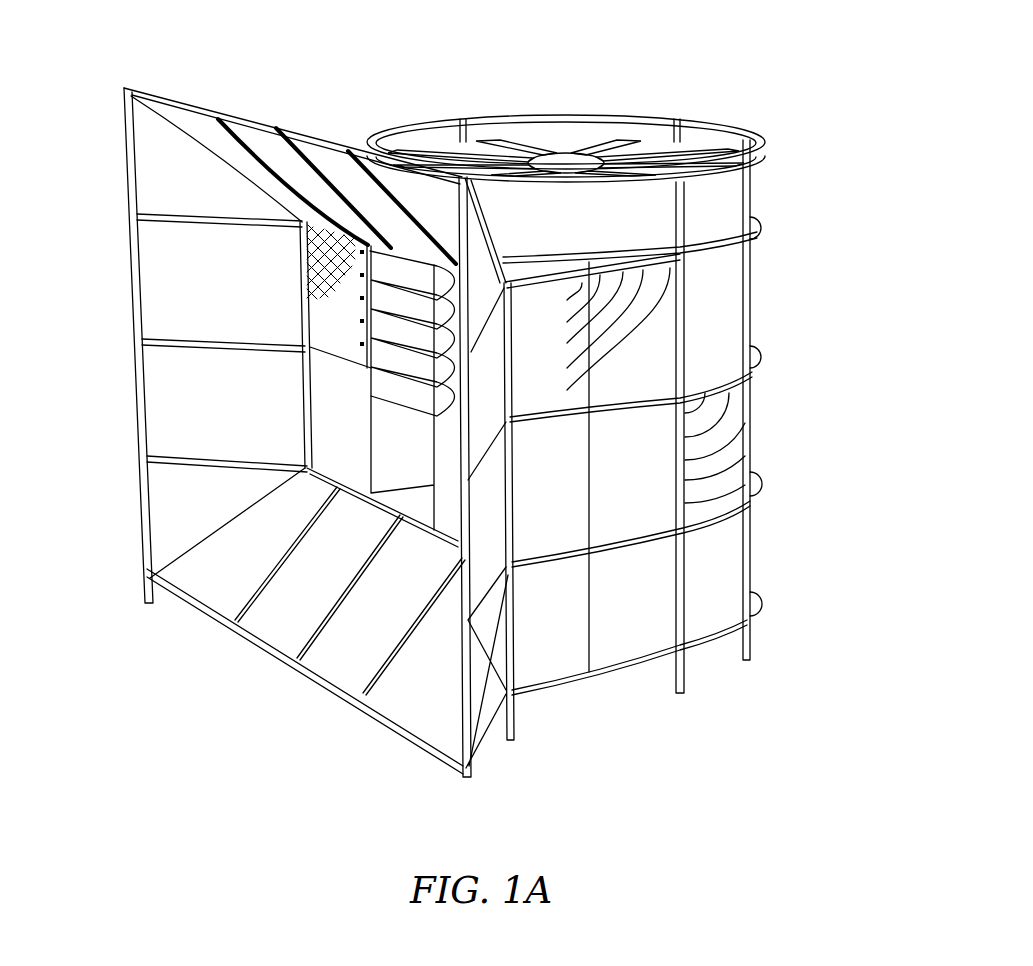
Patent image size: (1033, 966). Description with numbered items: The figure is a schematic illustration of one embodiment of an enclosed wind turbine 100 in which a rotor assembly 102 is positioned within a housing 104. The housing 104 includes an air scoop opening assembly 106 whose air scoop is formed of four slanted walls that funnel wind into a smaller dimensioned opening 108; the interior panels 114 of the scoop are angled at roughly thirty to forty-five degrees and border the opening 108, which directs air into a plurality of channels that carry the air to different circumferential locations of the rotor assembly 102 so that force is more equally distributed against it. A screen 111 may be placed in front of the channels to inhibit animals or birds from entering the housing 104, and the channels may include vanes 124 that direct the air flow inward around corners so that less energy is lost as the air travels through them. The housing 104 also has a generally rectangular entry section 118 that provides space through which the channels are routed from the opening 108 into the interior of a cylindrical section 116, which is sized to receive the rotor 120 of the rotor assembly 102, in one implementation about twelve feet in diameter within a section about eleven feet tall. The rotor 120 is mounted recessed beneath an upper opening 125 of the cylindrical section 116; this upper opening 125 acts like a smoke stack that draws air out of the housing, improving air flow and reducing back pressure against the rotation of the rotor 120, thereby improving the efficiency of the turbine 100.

The wind turbine 100 is at (528, 106).
The rotor assembly 102 is at (648, 108).
The housing 104 is at (780, 185).
The air scoop opening assembly 106 is at (187, 83).
The opening 108 is at (192, 394).
The screen 111 is at (355, 272).
The interior panels 114 is at (326, 601).
The cylindrical section 116 is at (762, 421).
The entry section 118 is at (576, 702).
The rotor 120 is at (700, 150).
The vanes 124 is at (407, 266).
The upper opening 125 is at (567, 108).